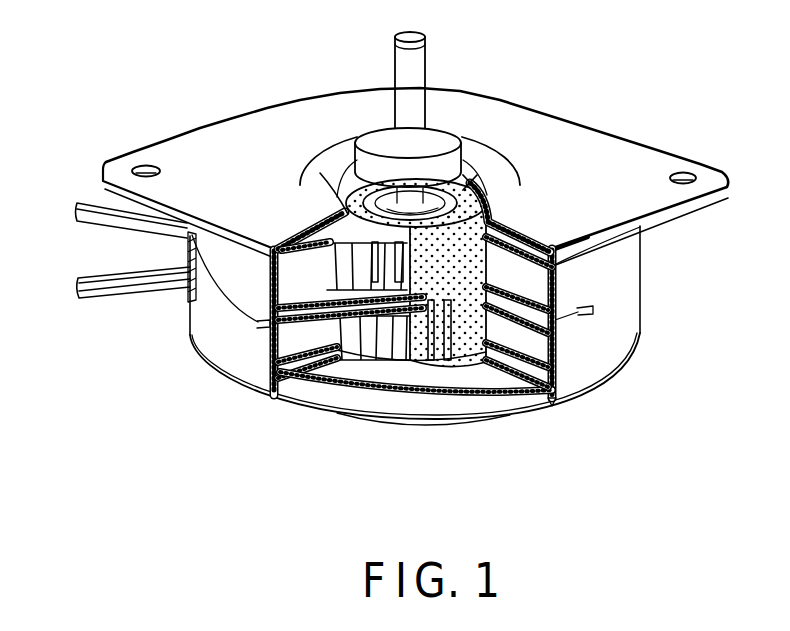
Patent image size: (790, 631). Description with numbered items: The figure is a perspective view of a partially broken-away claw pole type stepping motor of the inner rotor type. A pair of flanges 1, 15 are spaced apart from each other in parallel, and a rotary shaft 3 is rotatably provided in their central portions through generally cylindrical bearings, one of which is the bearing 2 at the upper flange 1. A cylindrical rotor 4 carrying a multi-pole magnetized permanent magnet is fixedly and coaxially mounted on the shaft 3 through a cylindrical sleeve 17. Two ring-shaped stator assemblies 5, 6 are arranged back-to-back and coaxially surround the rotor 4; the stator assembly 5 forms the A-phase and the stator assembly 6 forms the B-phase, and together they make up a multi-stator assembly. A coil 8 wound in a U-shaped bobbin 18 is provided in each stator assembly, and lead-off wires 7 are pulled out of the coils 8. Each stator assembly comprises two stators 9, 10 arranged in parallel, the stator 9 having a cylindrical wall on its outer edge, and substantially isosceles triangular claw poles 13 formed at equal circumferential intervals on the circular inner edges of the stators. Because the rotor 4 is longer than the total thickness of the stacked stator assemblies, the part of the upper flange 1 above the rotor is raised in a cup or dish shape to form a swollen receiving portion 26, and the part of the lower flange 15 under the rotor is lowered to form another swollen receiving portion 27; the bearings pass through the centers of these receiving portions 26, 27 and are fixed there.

The flange 1 is at (575, 136).
The bearing 2 is at (437, 150).
The rotary shaft 3 is at (415, 36).
The rotor 4 is at (490, 215).
The stator assembly 5 is at (630, 267).
The stator assembly 6 is at (630, 330).
The lead-off wires 7 is at (88, 282).
The coil 8 is at (279, 247).
The stator 9 is at (345, 217).
The stator 10 is at (283, 243).
The claw poles 13 is at (437, 343).
The flange 15 is at (228, 385).
The cylindrical sleeve 17 is at (470, 181).
The U-shaped bobbin 18 is at (549, 402).
The swollen receiving portion 26 is at (342, 226).
The swollen receiving portion 27 is at (416, 433).